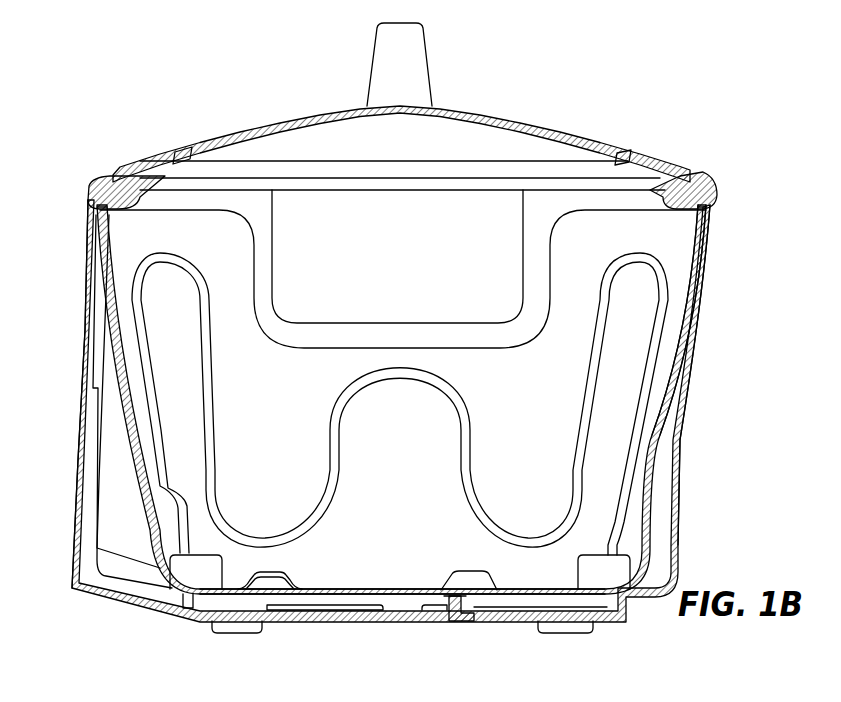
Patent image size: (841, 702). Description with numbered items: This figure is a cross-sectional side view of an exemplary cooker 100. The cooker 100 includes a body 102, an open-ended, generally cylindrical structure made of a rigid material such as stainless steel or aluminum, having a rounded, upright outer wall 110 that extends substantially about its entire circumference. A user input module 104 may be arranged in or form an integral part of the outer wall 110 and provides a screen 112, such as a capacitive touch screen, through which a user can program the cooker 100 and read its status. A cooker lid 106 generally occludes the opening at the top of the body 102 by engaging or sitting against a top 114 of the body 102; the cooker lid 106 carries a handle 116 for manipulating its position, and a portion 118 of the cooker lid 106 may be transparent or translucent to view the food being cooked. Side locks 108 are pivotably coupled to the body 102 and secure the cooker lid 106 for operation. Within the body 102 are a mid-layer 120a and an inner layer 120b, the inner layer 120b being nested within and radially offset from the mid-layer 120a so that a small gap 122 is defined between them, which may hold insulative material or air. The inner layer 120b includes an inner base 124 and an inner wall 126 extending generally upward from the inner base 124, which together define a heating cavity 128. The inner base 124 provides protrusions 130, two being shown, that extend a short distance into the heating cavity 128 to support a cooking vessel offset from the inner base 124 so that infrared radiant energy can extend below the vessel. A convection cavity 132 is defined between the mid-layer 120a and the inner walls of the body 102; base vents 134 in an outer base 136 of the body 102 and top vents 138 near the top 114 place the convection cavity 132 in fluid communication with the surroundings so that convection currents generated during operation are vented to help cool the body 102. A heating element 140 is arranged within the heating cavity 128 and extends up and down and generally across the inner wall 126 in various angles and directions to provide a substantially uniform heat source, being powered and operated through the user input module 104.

The cooker 100 is at (126, 136).
The body 102 is at (698, 430).
The user input module 104 is at (100, 352).
The cooker lid 106 is at (641, 152).
The side locks 108 is at (318, 210).
The outer wall 110 is at (686, 477).
The screen 112 is at (82, 476).
The top 114 is at (695, 190).
The handle 116 is at (398, 45).
The portion 118 is at (500, 124).
The mid-layer 120a is at (700, 257).
The inner layer 120b is at (684, 298).
The gap 122 is at (676, 360).
The inner base 124 is at (350, 588).
The inner wall 126 is at (93, 256).
The heating cavity 128 is at (285, 459).
The protrusions 130 is at (268, 572).
The convection cavity 132 is at (122, 546).
The base vents 134 is at (337, 607).
The outer base 136 is at (282, 624).
The top vents 138 is at (95, 213).
The heating element 140 is at (133, 281).